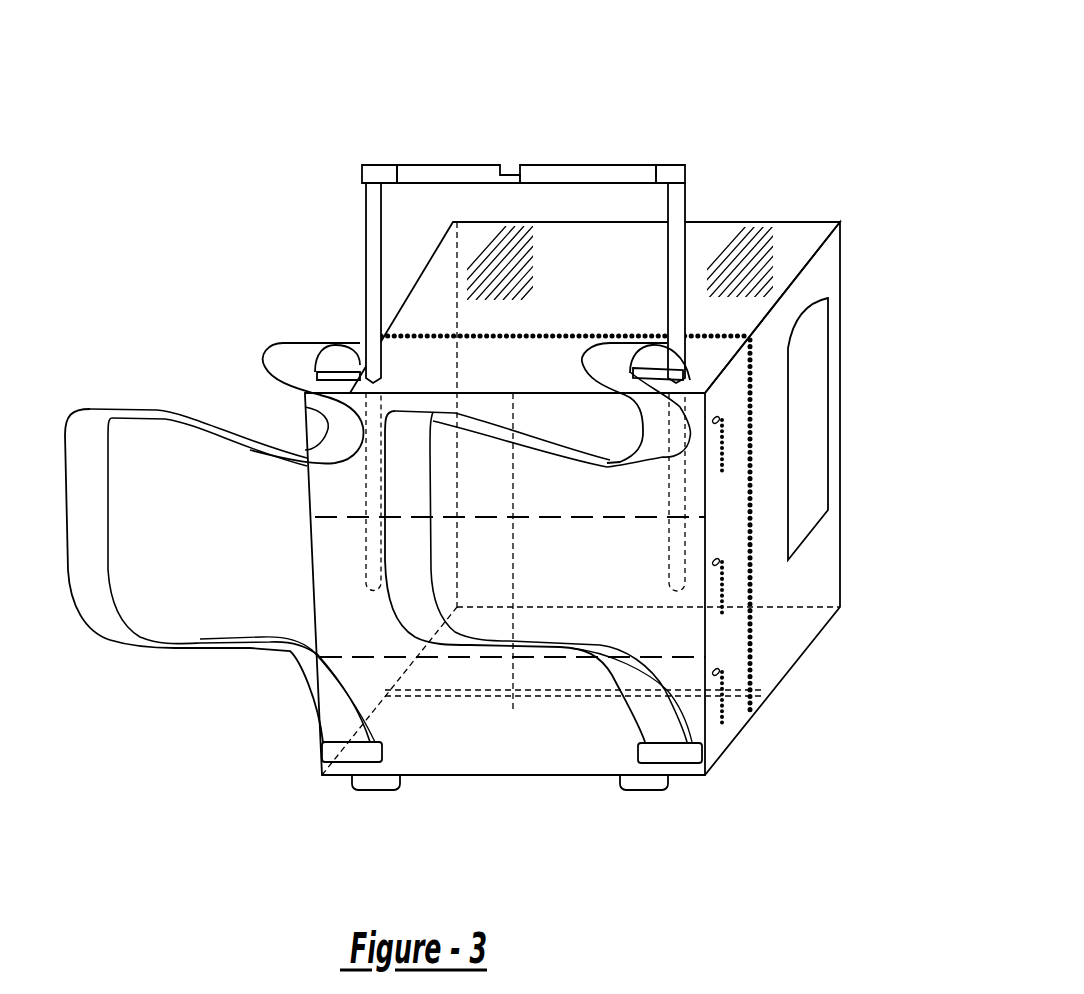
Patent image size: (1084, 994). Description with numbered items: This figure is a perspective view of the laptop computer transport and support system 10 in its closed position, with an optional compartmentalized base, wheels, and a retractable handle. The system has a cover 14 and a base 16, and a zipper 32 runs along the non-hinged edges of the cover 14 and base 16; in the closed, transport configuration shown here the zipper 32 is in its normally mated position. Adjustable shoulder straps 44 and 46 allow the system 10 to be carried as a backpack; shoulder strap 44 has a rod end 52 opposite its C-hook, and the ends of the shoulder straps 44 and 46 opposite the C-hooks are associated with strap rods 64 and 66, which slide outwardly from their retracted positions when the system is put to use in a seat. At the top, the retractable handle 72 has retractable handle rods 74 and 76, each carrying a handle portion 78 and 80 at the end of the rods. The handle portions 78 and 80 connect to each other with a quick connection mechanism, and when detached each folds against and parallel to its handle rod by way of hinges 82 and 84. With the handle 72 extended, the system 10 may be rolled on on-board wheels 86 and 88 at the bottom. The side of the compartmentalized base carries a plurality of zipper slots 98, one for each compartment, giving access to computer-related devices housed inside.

The laptop computer transport and support system 10 is at (260, 198).
The cover 14 is at (807, 237).
The base 16 is at (790, 650).
The zipper 32 is at (862, 257).
The shoulder strap 44 is at (95, 522).
The shoulder strap 46 is at (423, 567).
The rod end 52 is at (380, 380).
The strap rod 64 is at (322, 750).
The strap rod 66 is at (693, 777).
The retractable handle 72 is at (490, 117).
The retractable handle rod 74 is at (367, 245).
The retractable handle rod 76 is at (673, 207).
The handle portion 78 is at (447, 173).
The handle portion 80 is at (565, 175).
The hinge 82 is at (397, 165).
The hinge 84 is at (647, 172).
The wheel 86 is at (397, 780).
The wheel 88 is at (623, 780).
The zipper slot 98 is at (723, 693).